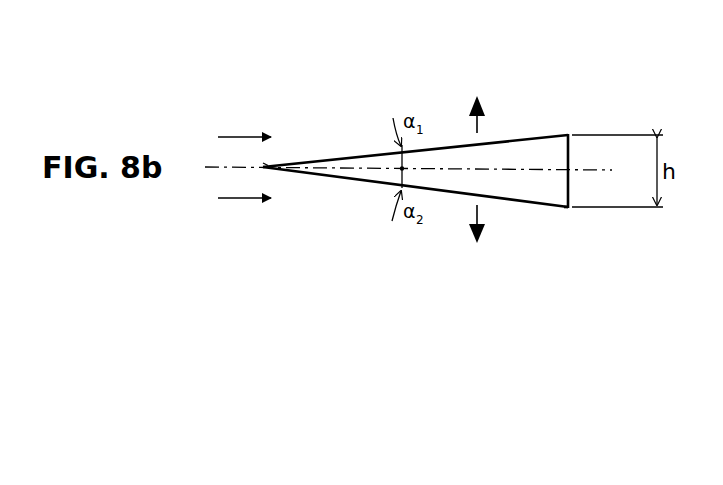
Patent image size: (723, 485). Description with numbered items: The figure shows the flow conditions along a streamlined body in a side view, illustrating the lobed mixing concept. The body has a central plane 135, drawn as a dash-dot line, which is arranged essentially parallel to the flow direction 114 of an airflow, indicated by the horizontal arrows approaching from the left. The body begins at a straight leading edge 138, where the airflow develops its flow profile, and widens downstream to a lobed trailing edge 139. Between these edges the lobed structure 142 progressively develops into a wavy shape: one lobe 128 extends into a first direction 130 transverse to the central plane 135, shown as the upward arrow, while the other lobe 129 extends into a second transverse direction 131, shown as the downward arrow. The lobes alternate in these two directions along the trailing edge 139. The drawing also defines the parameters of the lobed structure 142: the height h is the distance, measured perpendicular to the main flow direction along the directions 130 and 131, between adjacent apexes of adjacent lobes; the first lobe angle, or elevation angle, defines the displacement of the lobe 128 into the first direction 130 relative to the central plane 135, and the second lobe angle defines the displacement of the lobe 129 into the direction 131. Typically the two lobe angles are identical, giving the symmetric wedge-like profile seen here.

The flow direction 114 is at (240, 137).
The lobe extending in first direction 128 is at (548, 132).
The lobe extending in second direction 129 is at (547, 210).
The first direction 130 is at (471, 100).
The second transverse direction 131 is at (470, 235).
The central plane 135 is at (373, 174).
The leading edge 138 is at (263, 163).
The trailing edge 139 is at (572, 150).
The lobed structure 142 is at (553, 212).